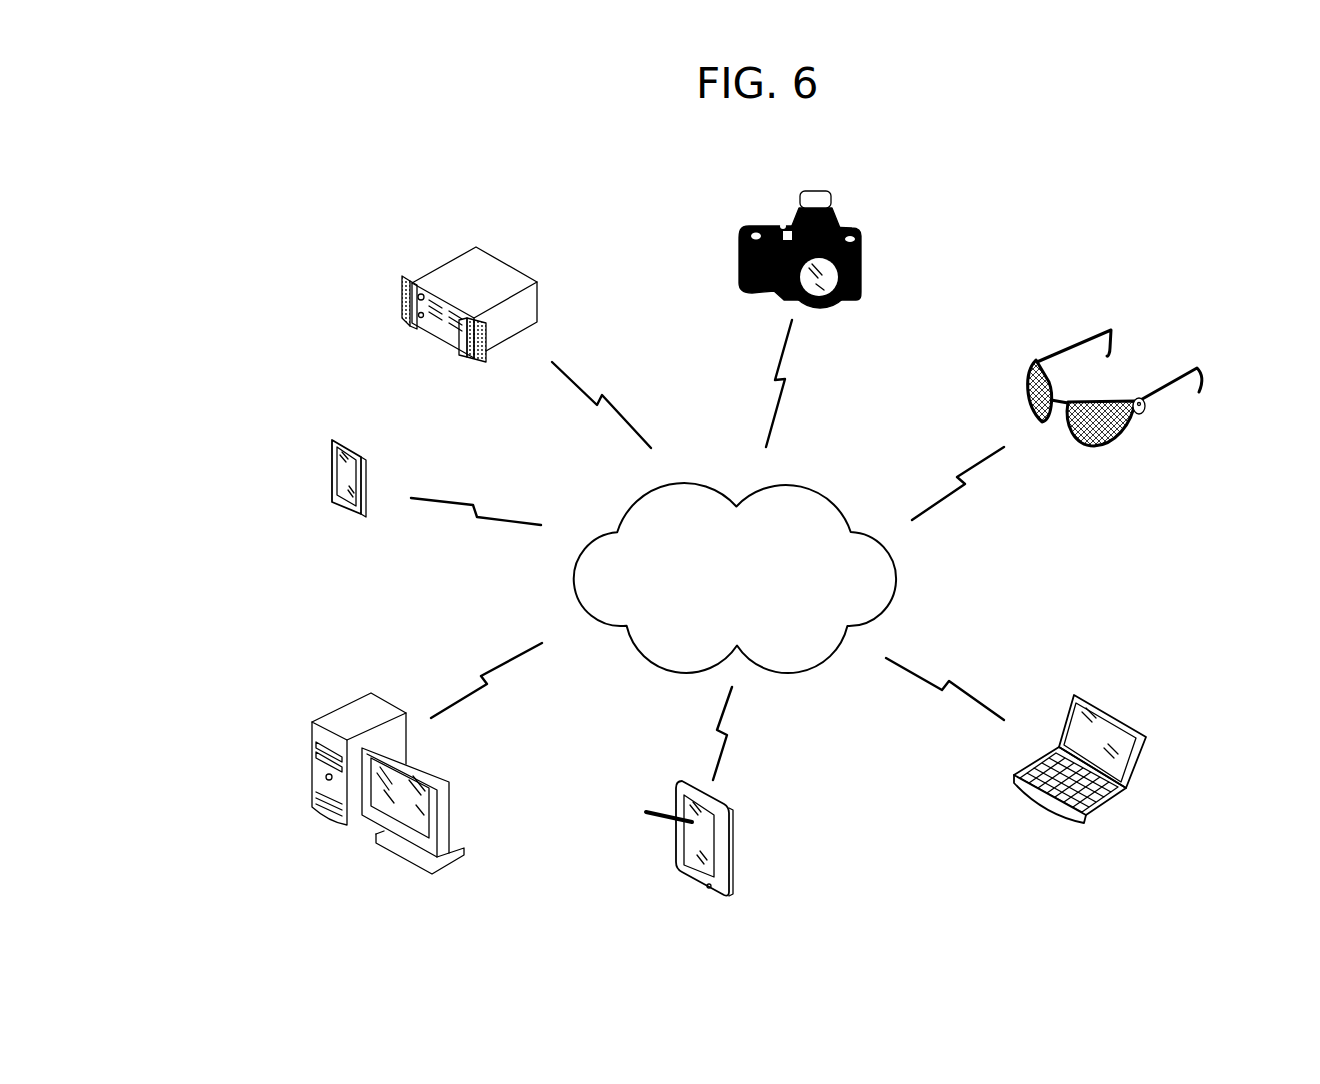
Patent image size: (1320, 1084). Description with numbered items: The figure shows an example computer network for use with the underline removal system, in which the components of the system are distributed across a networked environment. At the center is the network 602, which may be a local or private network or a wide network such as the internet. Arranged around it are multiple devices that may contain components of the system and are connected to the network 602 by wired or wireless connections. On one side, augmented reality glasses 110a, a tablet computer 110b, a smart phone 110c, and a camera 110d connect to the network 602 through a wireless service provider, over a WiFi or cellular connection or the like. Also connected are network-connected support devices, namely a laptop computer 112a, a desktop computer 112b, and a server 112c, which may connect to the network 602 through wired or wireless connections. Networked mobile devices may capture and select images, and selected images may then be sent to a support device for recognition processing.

The network 602 is at (806, 491).
The augmented reality (AR) glasses 110a is at (1104, 323).
The tablet computer 110b is at (722, 838).
The smart phone 110c is at (327, 470).
The camera 110d is at (822, 192).
The laptop computer 112a is at (1143, 737).
The desktop computer 112b is at (298, 737).
The server 112c is at (441, 263).